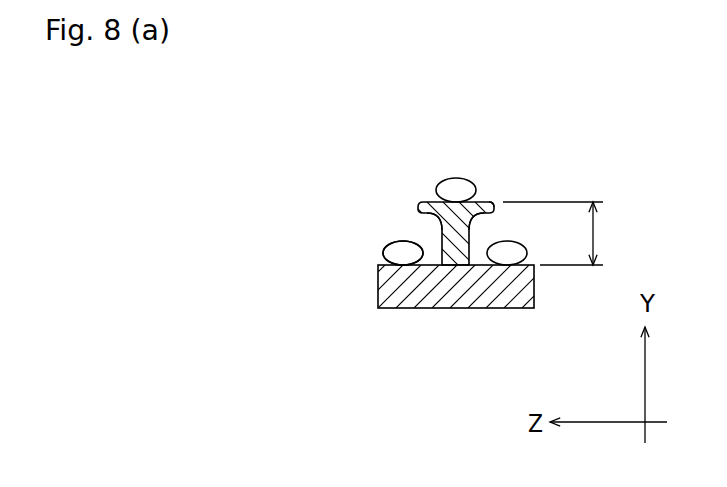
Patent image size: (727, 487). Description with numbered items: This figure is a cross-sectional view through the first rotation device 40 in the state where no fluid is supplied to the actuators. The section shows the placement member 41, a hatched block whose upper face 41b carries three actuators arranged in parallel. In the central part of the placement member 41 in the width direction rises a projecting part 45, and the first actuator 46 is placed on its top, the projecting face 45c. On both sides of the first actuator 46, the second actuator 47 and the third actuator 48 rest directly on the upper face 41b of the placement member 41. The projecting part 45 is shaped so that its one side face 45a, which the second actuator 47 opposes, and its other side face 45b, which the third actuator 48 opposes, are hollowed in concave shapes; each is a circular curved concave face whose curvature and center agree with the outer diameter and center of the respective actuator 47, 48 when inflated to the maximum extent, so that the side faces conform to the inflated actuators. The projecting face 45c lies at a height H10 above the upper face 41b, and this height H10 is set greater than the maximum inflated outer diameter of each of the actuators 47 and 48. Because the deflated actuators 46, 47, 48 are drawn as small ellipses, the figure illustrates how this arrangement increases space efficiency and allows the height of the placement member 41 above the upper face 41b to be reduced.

The first rotation device 40 is at (333, 362).
The placement member 41 is at (498, 312).
The upper face 41b is at (384, 251).
The projecting part 45 is at (497, 200).
The one side face 45a is at (477, 228).
The other side face 45b is at (437, 234).
The projecting face 45c is at (485, 200).
The first actuator 46 is at (450, 177).
The second actuator 47 is at (533, 252).
The third actuator 48 is at (393, 233).
The height H10 is at (577, 233).